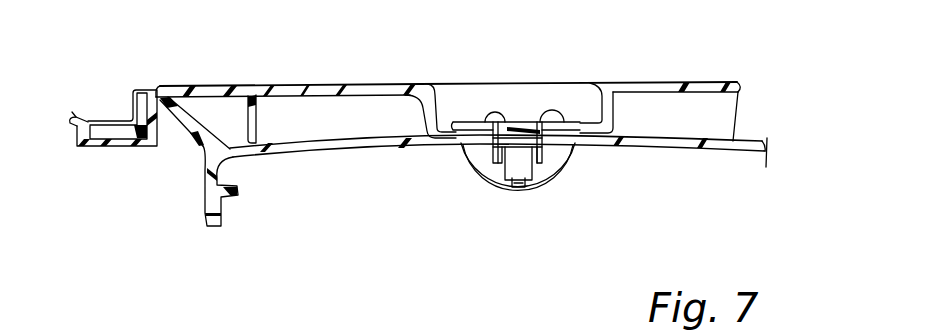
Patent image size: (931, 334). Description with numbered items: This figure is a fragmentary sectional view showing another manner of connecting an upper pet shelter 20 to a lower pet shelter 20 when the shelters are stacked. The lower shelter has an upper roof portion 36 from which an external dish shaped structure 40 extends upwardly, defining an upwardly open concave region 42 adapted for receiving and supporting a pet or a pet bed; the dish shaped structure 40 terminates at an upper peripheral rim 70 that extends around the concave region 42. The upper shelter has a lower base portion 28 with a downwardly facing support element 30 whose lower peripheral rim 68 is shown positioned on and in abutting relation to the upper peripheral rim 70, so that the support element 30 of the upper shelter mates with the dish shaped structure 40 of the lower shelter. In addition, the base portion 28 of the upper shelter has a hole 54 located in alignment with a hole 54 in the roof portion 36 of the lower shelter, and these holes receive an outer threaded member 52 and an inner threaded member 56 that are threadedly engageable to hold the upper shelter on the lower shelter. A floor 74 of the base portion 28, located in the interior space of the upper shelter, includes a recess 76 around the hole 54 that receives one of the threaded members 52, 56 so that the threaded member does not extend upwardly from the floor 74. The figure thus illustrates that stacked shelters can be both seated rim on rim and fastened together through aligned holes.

The pet shelter 20 is at (732, 76).
The lower base portion 28 is at (80, 125).
The downwardly facing support element 30 is at (137, 147).
The lower peripheral rim 68 is at (131, 164).
The upper roof portion 36 is at (737, 123).
The external dish shaped structure 40 is at (203, 146).
The upwardly open concave region 42 is at (330, 133).
The outer threaded member 52 is at (524, 188).
The hole 54 is at (483, 142).
The inner threaded member 56 is at (516, 120).
The upper peripheral rim 70 is at (215, 101).
The floor 74 is at (696, 83).
The recess 76 is at (592, 90).